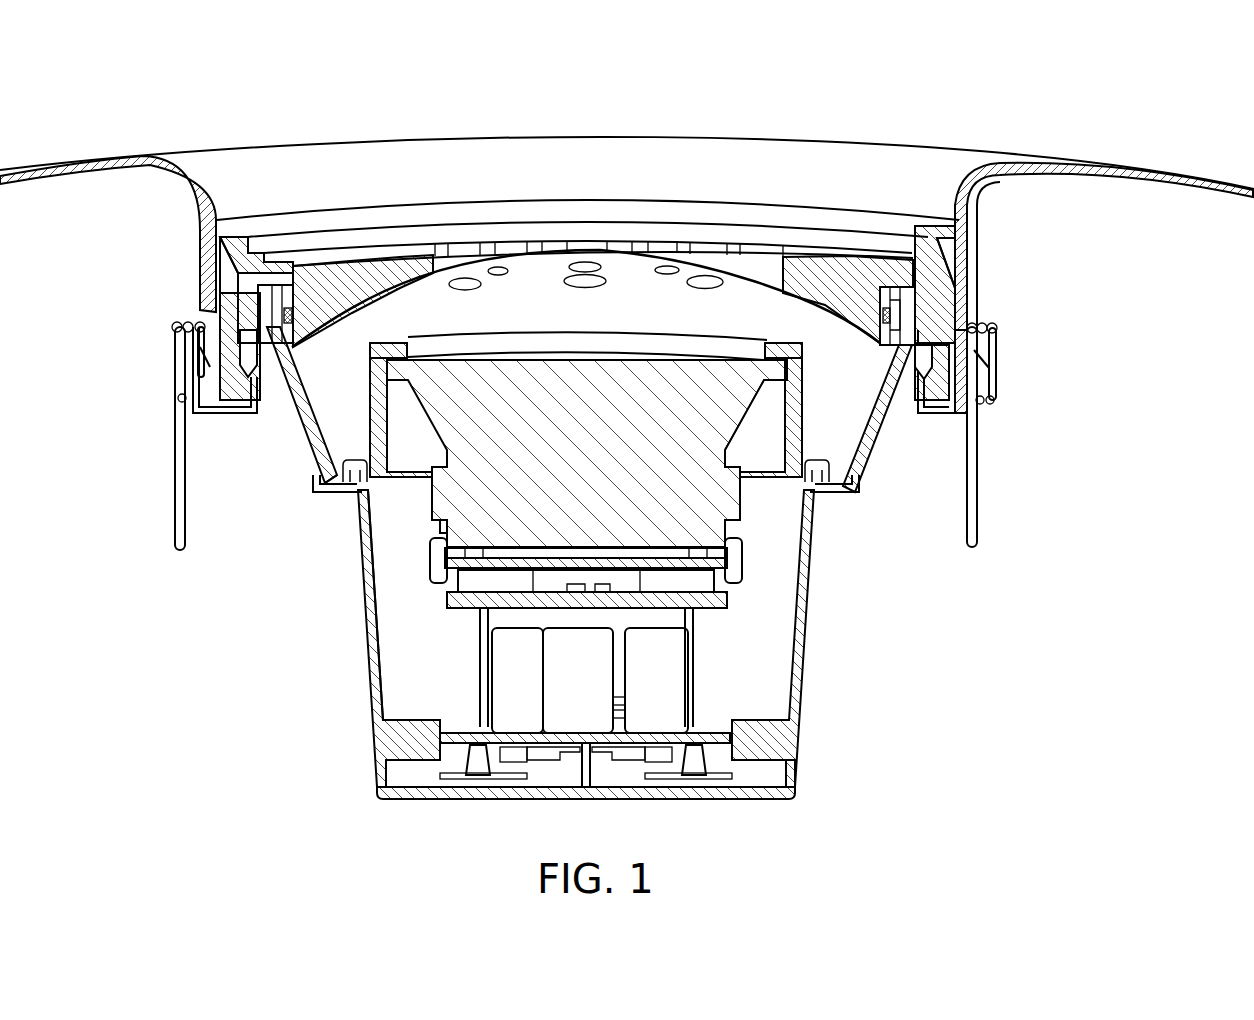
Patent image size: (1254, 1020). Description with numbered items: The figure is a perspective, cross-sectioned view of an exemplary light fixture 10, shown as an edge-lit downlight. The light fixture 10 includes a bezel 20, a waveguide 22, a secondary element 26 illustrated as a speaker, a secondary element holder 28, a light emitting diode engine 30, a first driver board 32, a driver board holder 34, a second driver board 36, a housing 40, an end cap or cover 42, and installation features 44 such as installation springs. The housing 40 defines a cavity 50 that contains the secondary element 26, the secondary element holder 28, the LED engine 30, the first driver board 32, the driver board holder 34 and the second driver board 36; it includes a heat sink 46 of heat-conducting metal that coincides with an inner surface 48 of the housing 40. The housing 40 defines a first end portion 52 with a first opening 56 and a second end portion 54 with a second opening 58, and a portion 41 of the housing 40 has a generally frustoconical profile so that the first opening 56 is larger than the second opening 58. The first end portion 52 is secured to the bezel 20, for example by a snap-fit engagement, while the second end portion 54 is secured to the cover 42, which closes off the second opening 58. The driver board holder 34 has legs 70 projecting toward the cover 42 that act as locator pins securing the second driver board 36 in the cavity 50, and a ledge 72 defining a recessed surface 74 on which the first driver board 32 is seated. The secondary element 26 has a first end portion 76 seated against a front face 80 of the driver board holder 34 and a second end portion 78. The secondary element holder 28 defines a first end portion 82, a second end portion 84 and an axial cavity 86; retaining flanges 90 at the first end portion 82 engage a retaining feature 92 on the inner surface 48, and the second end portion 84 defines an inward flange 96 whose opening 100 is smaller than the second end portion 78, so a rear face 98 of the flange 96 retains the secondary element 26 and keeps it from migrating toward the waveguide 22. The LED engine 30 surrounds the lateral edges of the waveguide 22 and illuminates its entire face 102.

The light fixture 10 is at (892, 81).
The bezel 20 is at (1098, 167).
The waveguide 22 is at (832, 272).
The secondary element 26 is at (728, 487).
The secondary element holder 28 is at (795, 393).
The light emitting diode (LED) engine 30 is at (902, 317).
The first driver board 32 is at (608, 563).
The driver board holder 34 is at (712, 604).
The second driver board 36 is at (722, 745).
The housing 40 is at (822, 520).
The portion 41 is at (300, 440).
The end cap or cover 42 is at (776, 798).
The installation features 44 is at (978, 530).
The heat sink 46 is at (292, 395).
The inner surface 48 is at (318, 463).
The cavity 50 is at (396, 580).
The first end portion 52 is at (946, 292).
The second end portion 54 is at (812, 718).
The first opening 56 is at (905, 290).
The second opening 58 is at (793, 770).
The legs 70 is at (460, 686).
The ledge 72 is at (727, 585).
The recessed surface 74 is at (445, 584).
The first end portion 76 is at (680, 547).
The second end portion 78 is at (718, 370).
The front face 80 is at (440, 526).
The first end portion 82 is at (830, 468).
The second end portion 84 is at (772, 352).
The cavity 86 is at (782, 420).
The retaining flanges 90 is at (352, 486).
The retaining feature 92 is at (840, 480).
The flange 96 is at (372, 380).
The rear face 98 is at (405, 348).
The opening 100 is at (460, 352).
The face 102 is at (320, 250).